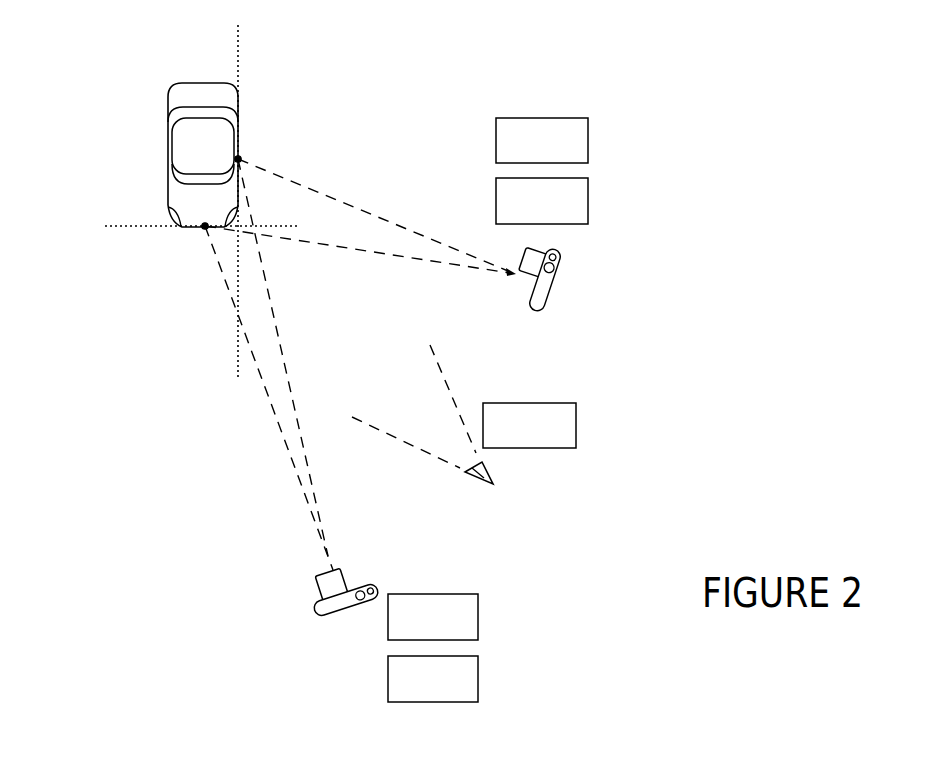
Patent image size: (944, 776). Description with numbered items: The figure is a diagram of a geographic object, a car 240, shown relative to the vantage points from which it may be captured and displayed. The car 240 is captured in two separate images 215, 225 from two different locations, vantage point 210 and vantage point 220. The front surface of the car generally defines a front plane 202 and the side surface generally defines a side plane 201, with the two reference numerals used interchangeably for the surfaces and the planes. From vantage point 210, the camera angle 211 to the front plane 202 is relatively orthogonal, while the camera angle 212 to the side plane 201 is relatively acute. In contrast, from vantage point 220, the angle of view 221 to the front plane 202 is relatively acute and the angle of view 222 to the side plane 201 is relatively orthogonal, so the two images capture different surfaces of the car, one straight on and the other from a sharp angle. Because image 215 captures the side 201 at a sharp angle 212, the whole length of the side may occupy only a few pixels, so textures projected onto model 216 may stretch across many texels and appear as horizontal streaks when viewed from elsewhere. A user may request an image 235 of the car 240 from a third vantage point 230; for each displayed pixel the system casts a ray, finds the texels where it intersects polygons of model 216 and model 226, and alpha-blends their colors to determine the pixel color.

The side plane 201 is at (241, 47).
The front plane 202 is at (121, 228).
The car 240 is at (168, 104).
The vantage point 210 is at (314, 611).
The camera angle 211 is at (300, 500).
The camera angle 212 is at (325, 500).
The image 215 is at (478, 612).
The model 216 is at (478, 672).
The vantage point 220 is at (562, 258).
The angle of view 221 is at (437, 266).
The angle of view 222 is at (387, 222).
The image 225 is at (588, 199).
The model 226 is at (588, 133).
The vantage point 230 is at (490, 475).
The image 235 is at (576, 420).